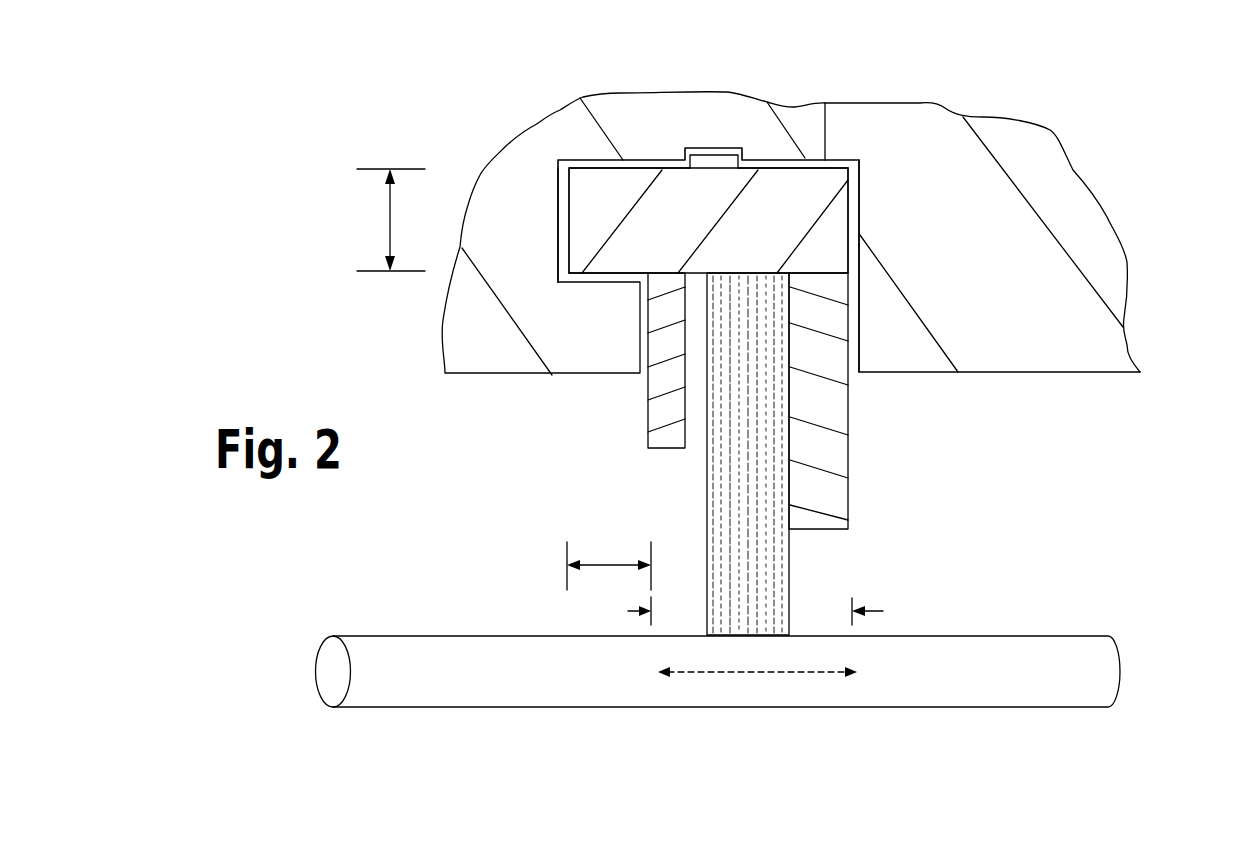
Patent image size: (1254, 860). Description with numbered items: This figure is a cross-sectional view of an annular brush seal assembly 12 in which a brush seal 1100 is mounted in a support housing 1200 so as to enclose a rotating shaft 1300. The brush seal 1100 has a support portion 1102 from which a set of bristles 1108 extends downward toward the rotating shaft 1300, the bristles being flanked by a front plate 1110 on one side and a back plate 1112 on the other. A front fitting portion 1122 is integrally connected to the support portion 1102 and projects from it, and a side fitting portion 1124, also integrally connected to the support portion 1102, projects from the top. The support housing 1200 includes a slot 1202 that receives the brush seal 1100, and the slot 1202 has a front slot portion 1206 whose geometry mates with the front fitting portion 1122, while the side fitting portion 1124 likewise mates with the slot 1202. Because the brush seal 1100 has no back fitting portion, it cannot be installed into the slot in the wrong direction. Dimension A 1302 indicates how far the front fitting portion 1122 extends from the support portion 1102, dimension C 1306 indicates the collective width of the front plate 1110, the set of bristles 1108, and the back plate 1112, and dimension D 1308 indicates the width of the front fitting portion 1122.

The brush seal assembly 12 is at (820, 297).
The brush seal 1100 is at (755, 341).
The support portion 1102 is at (703, 203).
The set of bristles 1108 is at (707, 495).
The front plate 1110 is at (648, 430).
The back plate 1112 is at (848, 470).
The front fitting portion 1122 is at (558, 182).
The side fitting portion 1124 is at (720, 160).
The support housing 1200 is at (817, 227).
The slot 1202 is at (856, 190).
The front slot portion 1206 is at (561, 204).
The rotating shaft 1300 is at (458, 708).
The dimension A 1302 is at (602, 562).
The dimension C 1306 is at (873, 611).
The dimension D 1308 is at (388, 193).